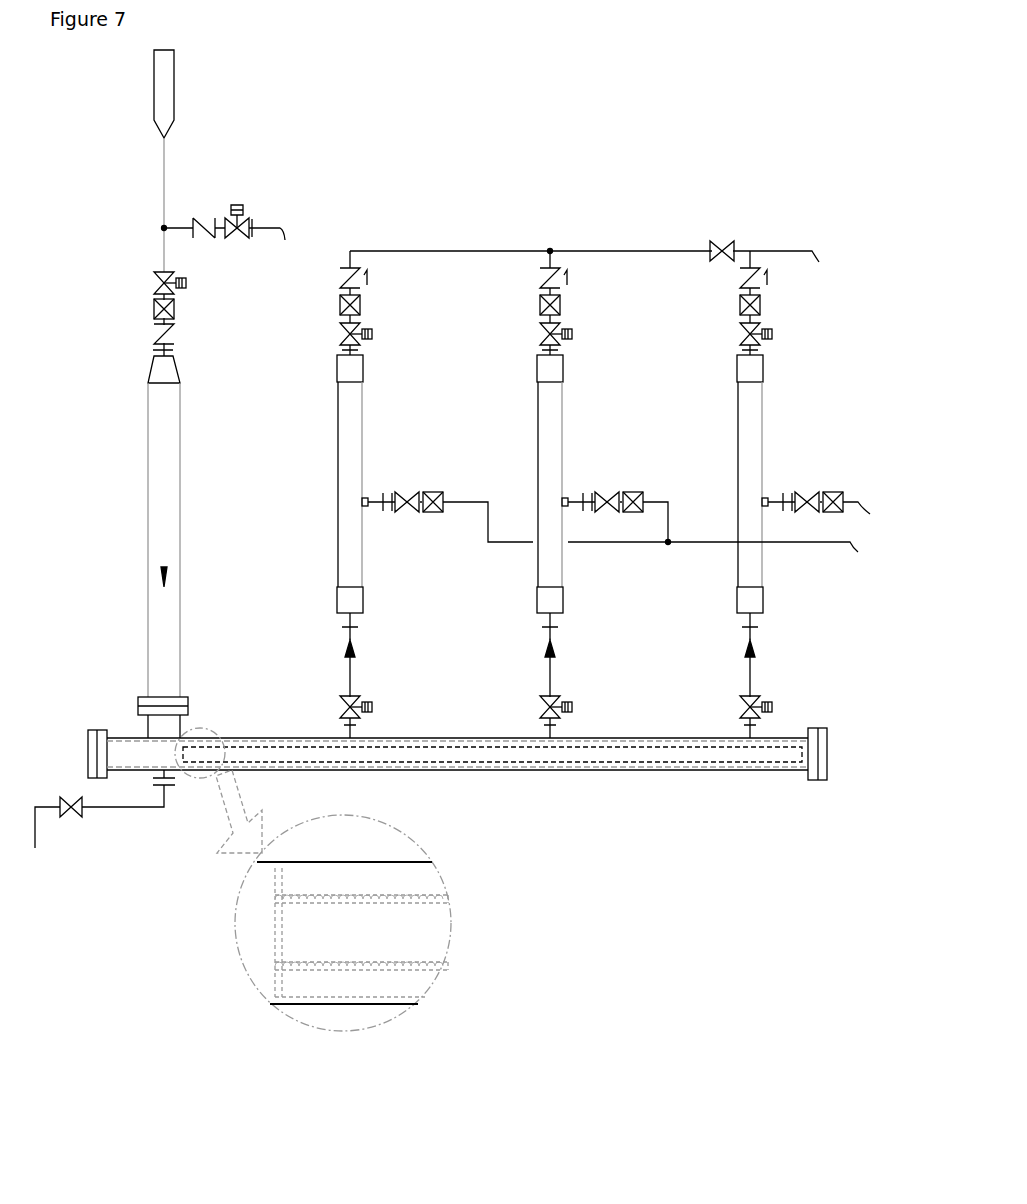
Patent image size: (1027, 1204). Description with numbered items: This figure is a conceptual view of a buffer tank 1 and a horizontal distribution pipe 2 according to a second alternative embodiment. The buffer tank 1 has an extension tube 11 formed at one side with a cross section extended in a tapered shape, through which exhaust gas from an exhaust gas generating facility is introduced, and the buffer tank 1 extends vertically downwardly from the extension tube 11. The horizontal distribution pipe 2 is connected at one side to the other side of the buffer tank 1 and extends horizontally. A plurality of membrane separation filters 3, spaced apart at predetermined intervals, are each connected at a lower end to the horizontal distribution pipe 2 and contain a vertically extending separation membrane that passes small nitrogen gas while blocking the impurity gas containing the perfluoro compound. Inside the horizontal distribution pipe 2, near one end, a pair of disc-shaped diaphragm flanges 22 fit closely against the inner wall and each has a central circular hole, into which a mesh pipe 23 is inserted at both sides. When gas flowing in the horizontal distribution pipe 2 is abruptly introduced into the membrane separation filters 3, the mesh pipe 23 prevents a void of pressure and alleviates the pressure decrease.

The buffer tank 1 is at (191, 547).
The extension tube 11 is at (172, 373).
The horizontal distribution pipe 2 is at (684, 770).
The diaphragm flanges 22 is at (275, 880).
The mesh pipe 23 is at (388, 903).
The membrane separation filters 3 is at (362, 557).